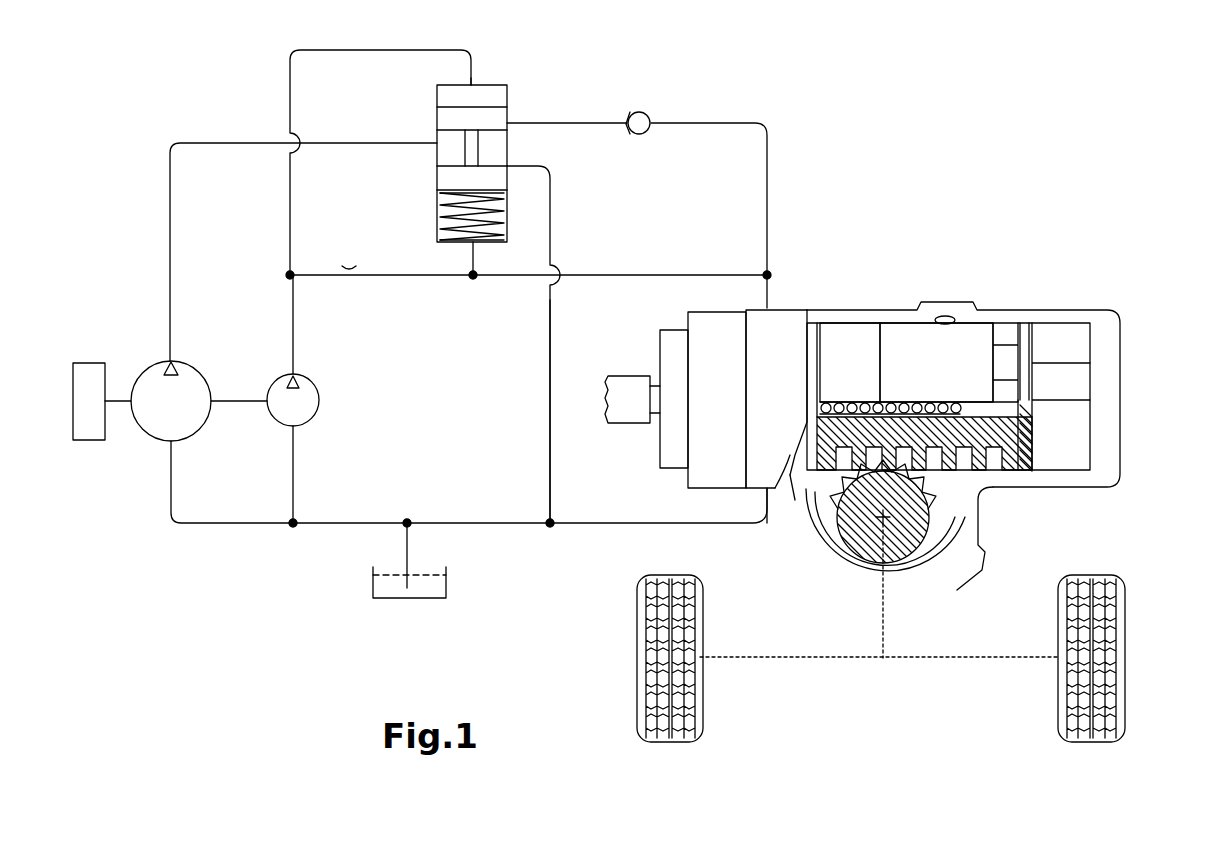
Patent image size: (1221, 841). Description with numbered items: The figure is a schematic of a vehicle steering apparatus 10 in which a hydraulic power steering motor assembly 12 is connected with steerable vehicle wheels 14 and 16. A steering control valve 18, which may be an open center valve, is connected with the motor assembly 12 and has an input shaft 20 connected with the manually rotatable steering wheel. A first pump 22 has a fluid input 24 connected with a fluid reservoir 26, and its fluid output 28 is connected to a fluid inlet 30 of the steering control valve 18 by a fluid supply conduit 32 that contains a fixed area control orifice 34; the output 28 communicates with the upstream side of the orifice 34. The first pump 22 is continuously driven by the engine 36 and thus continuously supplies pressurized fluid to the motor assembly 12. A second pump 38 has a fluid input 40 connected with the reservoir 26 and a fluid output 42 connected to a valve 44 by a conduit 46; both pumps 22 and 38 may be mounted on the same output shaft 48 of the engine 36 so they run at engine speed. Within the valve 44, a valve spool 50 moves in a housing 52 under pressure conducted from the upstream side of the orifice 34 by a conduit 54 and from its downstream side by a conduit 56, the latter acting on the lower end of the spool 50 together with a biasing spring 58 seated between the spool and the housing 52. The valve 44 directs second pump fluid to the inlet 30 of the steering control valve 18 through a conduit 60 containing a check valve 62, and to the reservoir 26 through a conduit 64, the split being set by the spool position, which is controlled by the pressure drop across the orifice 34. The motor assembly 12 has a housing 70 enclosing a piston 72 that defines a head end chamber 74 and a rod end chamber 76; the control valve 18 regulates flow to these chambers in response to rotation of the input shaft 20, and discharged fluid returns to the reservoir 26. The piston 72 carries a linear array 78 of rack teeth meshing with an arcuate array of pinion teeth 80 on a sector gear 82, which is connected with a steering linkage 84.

The vehicle steering apparatus 10 is at (965, 147).
The hydraulic power steering motor assembly 12 is at (1124, 380).
The steerable vehicle wheel 14 is at (640, 712).
The steerable vehicle wheel 16 is at (1122, 710).
The steering control valve 18 is at (670, 470).
The input shaft 20 is at (623, 410).
The first pump 22 is at (312, 406).
The fluid input 24 is at (305, 425).
The fluid reservoir 26 is at (392, 590).
The fluid output 28 is at (298, 380).
The fluid inlet 30 is at (771, 308).
The fluid supply conduit 32 is at (621, 274).
The fixed area control orifice 34 is at (352, 281).
The engine 36 is at (88, 425).
The second pump 38 is at (156, 395).
The fluid input 40 is at (180, 441).
The fluid output 42 is at (177, 361).
The valve 44 is at (493, 83).
The conduit 46 is at (225, 141).
The output shaft 48 is at (118, 405).
The valve spool 50 is at (494, 118).
The housing 52 is at (479, 82).
The conduit 54 is at (377, 48).
The conduit 56 is at (470, 257).
The biasing spring 58 is at (439, 210).
The conduit 60 is at (702, 122).
The check valve 62 is at (645, 117).
The conduit 64 is at (547, 400).
The housing 70 is at (1038, 312).
The piston 72 is at (900, 350).
The head end chamber 74 is at (800, 462).
The rod end chamber 76 is at (1086, 440).
The linear array of rack teeth 78 is at (992, 488).
The pinion teeth 80 is at (980, 518).
The sector gear 82 is at (860, 537).
The steering linkage 84 is at (886, 618).